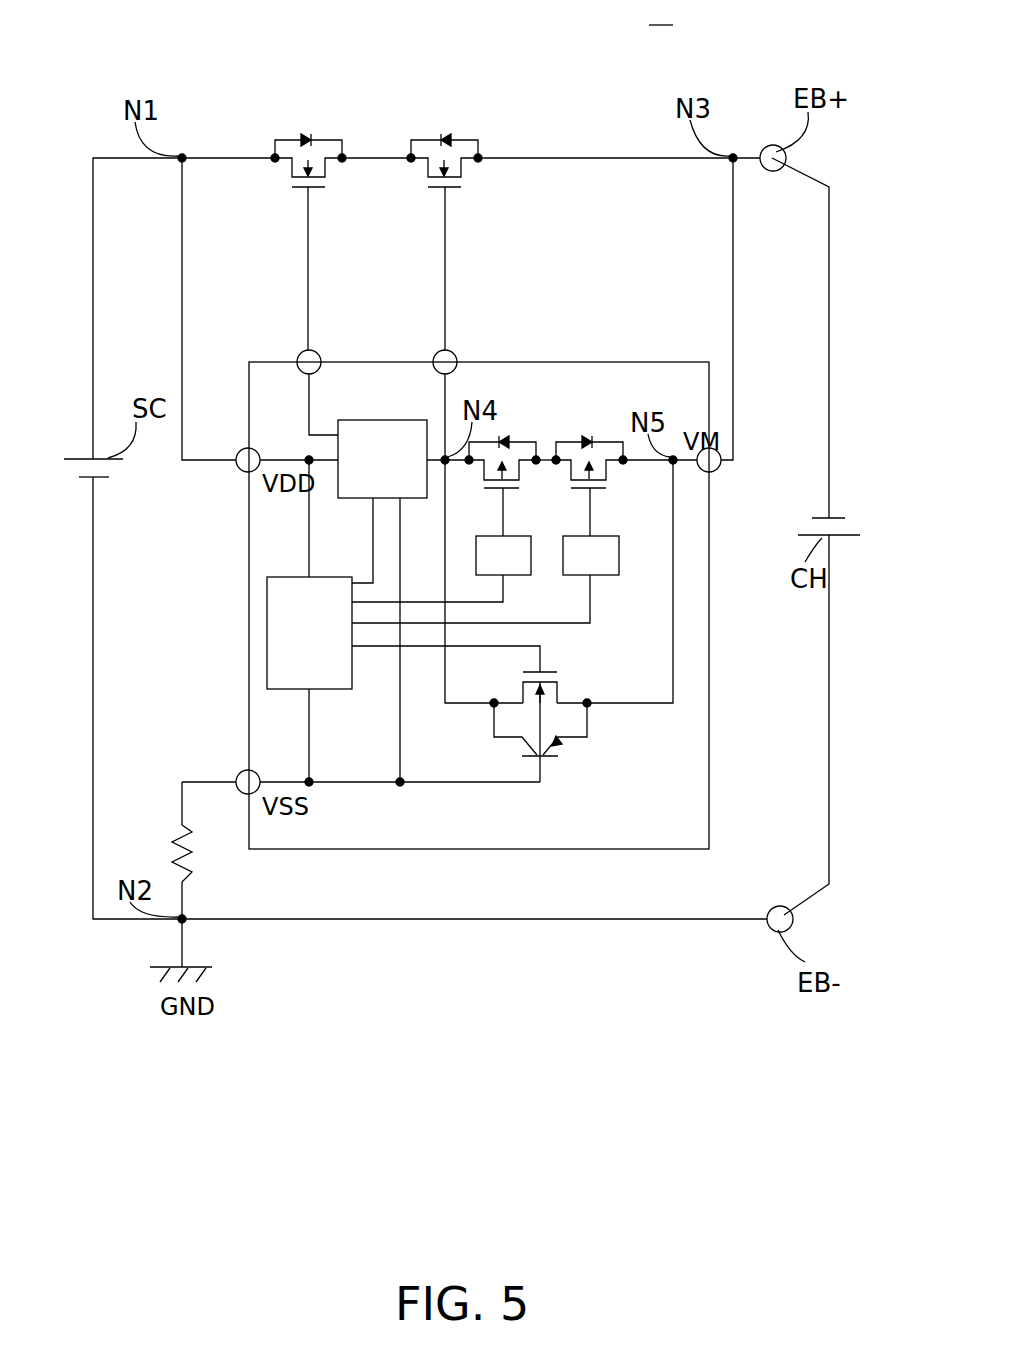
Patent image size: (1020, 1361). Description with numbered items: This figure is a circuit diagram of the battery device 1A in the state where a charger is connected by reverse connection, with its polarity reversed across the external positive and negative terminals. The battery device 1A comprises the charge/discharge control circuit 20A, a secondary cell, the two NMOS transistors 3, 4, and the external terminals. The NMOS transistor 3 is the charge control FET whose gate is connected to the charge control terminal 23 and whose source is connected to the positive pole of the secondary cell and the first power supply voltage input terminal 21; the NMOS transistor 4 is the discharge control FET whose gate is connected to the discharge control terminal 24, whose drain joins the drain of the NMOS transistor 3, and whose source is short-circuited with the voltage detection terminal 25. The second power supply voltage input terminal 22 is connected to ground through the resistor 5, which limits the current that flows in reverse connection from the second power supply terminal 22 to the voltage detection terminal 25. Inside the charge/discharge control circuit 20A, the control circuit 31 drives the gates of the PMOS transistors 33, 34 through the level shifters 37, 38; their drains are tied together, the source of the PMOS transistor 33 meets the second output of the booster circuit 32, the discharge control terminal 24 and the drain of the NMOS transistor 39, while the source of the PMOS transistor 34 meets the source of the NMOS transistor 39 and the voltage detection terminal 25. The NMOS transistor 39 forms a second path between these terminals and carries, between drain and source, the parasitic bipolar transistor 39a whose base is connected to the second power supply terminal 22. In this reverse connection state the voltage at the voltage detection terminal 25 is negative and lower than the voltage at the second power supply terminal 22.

The NMOS transistor 3 is at (320, 192).
The NMOS transistor 4 is at (456, 192).
The resistor 5 is at (172, 838).
The charge/discharge control circuit 20A is at (558, 360).
The VDD terminal 21 is at (240, 452).
The VSS terminal 22 is at (243, 773).
The charge control terminal 23 is at (300, 353).
The discharge control terminal 24 is at (435, 353).
The voltage detection terminal 25 is at (720, 470).
The control circuit 31 is at (330, 692).
The booster circuit 32 is at (392, 419).
The PMOS transistor 33 is at (523, 468).
The PMOS transistor 34 is at (610, 468).
The level shifter 37 is at (528, 562).
The level shifter 38 is at (615, 562).
The NMOS transistor 39 is at (558, 690).
The parasitic bipolar transistor 39a is at (552, 758).
The battery device 1A is at (663, 15).